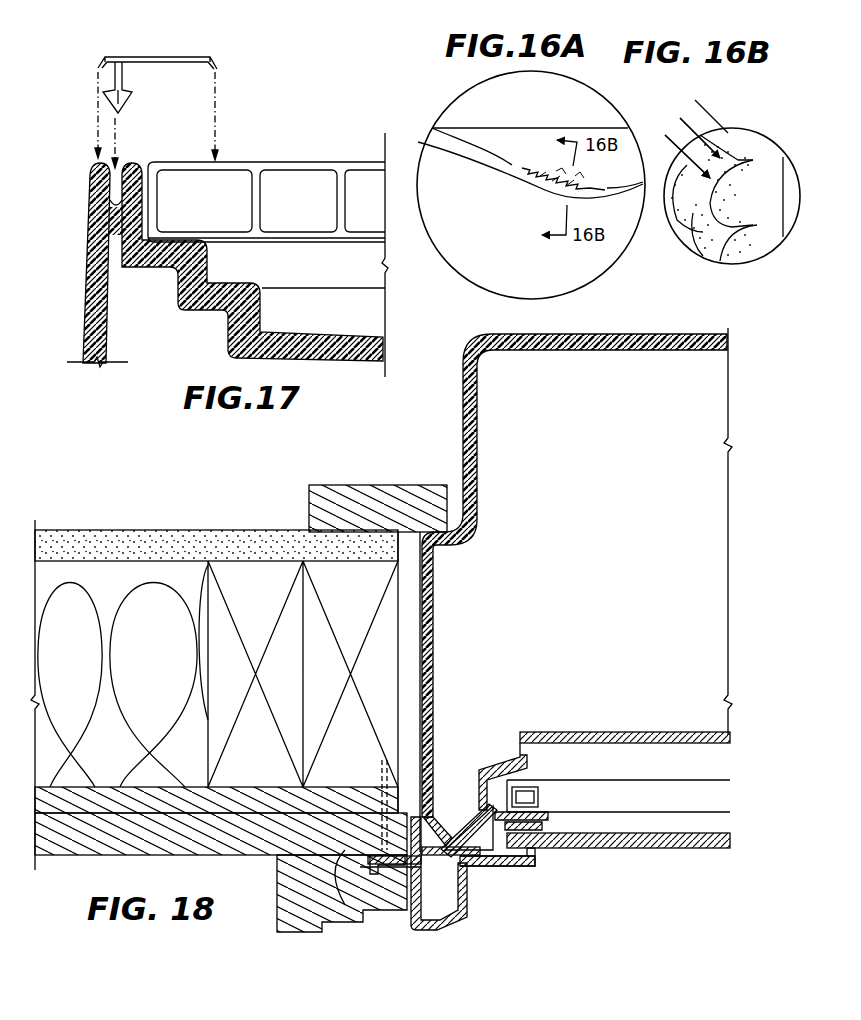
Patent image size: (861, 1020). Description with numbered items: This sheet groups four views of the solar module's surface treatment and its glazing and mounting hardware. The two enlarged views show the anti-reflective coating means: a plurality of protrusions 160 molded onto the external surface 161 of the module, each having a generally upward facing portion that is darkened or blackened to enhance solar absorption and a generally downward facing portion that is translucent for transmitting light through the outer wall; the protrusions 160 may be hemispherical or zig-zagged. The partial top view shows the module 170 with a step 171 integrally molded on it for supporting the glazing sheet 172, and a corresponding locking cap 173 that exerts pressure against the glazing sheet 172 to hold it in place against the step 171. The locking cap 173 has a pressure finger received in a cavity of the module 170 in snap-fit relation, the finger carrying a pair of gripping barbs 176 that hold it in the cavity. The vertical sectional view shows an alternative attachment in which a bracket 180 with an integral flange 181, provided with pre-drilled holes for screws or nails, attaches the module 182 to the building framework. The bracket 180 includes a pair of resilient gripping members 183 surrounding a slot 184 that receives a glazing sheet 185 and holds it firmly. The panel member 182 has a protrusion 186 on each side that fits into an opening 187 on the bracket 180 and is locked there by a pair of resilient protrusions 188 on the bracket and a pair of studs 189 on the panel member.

In FIG. 16B, the protrusions 160 is at (746, 138).
In FIG. 16A, the external surface 161 is at (518, 150).
In FIG. 17, the module 170 is at (181, 314).
In FIG. 17, the step 171 is at (180, 246).
In FIG. 17, the glazing sheet 172 is at (243, 159).
In FIG. 17, the locking cap 173 is at (167, 56).
In FIG. 17, the gripping barbs 176 is at (134, 101).
In FIG. 18, the bracket 180 is at (441, 934).
In FIG. 18, the flange 181 is at (354, 855).
In FIG. 18, the module 182 is at (655, 440).
In FIG. 18, the resilient gripping members 183 is at (537, 856).
In FIG. 18, the slot 184 is at (518, 868).
In FIG. 18, the glazing sheet 185 is at (627, 850).
In FIG. 18, the protrusion 186 is at (465, 812).
In FIG. 18, the opening 187 is at (426, 917).
In FIG. 18, the resilient protrusions 188 is at (498, 862).
In FIG. 18, the studs 189 is at (476, 852).